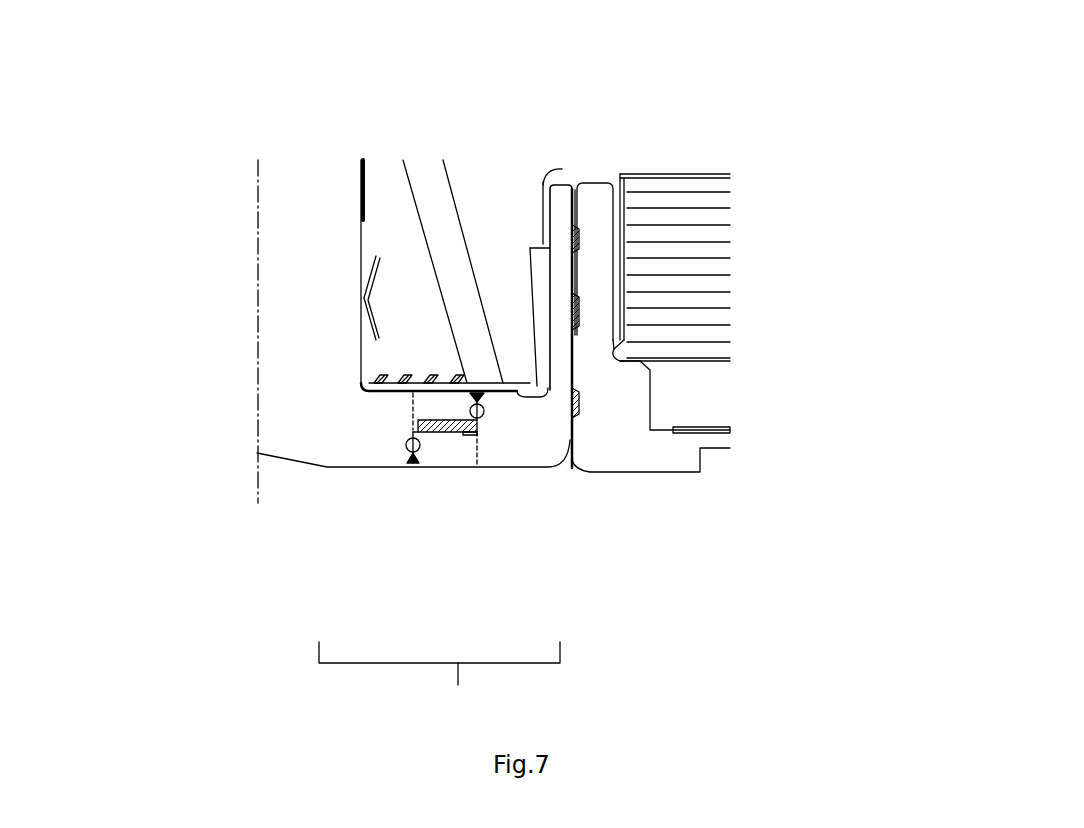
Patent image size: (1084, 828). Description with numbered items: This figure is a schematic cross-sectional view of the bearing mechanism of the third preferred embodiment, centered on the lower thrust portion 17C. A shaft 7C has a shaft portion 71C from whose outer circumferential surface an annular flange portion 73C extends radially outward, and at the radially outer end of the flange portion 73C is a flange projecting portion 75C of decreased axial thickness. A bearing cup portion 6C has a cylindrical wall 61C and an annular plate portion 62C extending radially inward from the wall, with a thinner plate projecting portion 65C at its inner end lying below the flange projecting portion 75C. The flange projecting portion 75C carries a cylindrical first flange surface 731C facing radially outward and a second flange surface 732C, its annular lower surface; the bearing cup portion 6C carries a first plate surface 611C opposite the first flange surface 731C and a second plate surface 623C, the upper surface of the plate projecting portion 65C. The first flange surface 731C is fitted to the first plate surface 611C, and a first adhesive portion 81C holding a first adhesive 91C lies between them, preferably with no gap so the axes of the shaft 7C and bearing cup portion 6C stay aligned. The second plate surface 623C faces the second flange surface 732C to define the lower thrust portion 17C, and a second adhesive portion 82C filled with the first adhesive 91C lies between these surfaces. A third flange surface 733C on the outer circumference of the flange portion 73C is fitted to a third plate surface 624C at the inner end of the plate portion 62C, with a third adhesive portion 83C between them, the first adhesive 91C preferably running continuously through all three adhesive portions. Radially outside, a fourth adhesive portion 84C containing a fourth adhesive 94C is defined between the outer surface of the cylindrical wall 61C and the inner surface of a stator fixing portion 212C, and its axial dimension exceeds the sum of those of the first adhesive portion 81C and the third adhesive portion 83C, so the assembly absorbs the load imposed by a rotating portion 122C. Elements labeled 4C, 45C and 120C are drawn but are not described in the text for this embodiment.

The shaft 7C is at (147, 162).
The rotating portion 122C is at (530, 137).
The bearing cup portion 6C is at (767, 520).
The shaft portion 71C is at (342, 198).
The flange portion 73C is at (390, 423).
The first flange surface 731C is at (455, 385).
The second flange surface 732C is at (428, 390).
The third flange surface 733C is at (408, 440).
The lens 4C is at (410, 284).
The tabs 45C is at (420, 400).
The clip wall 120C is at (537, 337).
The first adhesive portion 81C is at (485, 403).
The fourth adhesive 94C is at (576, 240).
The fourth adhesive portion 84C is at (575, 270).
The second adhesive portion 82C is at (500, 440).
The stator fixing portion 212C is at (598, 223).
The cylindrical wall 61C is at (557, 298).
The first plate surface 611C is at (500, 415).
The plate portion 62C is at (485, 416).
The flange projecting portion 75C is at (430, 408).
The first adhesive 91C is at (480, 392).
The third plate surface 624C is at (452, 440).
The plate projecting portion 65C is at (450, 437).
The second plate surface 623C is at (455, 450).
The third adhesive portion 83C is at (408, 465).
The lower thrust portion 17C is at (439, 679).